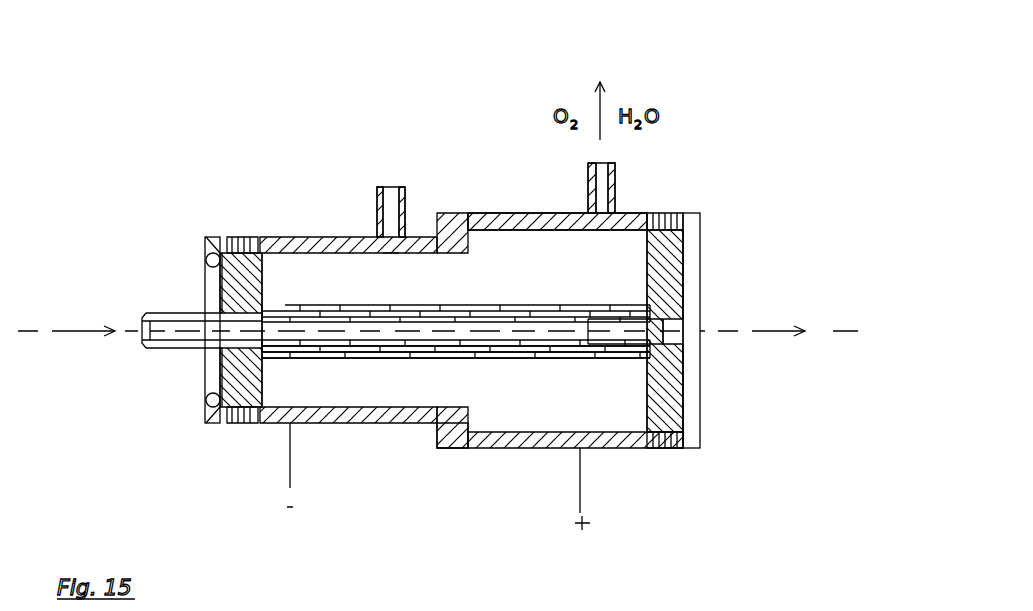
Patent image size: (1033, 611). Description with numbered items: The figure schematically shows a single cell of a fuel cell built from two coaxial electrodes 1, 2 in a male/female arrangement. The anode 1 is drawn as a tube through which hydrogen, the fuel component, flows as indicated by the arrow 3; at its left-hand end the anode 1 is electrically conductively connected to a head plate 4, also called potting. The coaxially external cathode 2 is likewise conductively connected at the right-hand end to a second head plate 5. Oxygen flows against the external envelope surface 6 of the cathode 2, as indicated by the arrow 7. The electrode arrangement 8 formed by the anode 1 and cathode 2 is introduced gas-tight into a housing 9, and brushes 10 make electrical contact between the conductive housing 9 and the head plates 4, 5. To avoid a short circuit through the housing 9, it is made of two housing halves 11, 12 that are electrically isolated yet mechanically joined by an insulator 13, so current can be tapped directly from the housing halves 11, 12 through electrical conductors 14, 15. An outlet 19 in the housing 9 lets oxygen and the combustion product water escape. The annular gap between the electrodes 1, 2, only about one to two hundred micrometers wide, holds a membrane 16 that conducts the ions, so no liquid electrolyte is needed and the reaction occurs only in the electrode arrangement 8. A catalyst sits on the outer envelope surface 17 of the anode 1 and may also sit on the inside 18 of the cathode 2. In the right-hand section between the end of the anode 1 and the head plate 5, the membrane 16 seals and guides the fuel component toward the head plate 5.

The anode 1 is at (388, 357).
The cathode 2 is at (437, 357).
The arrow indicating fuel component flow 3 is at (150, 330).
The head plate 4 is at (228, 377).
The second head plate 5 is at (668, 283).
The external envelope surface 6 is at (517, 357).
The arrow indicating oxygen flow 7 is at (390, 123).
The electrode arrangement 8 is at (330, 302).
The housing 9 is at (530, 207).
The brushes 10 is at (232, 237).
The housing half 11 is at (337, 237).
The housing half 12 is at (497, 220).
The insulator 13 is at (448, 430).
The electrical conductor 14 is at (290, 443).
The electrical conductor 15 is at (583, 478).
The membrane 16 is at (272, 350).
The outer envelope surface 17 is at (543, 357).
The inside 18 is at (668, 332).
The outlet 19 is at (617, 192).